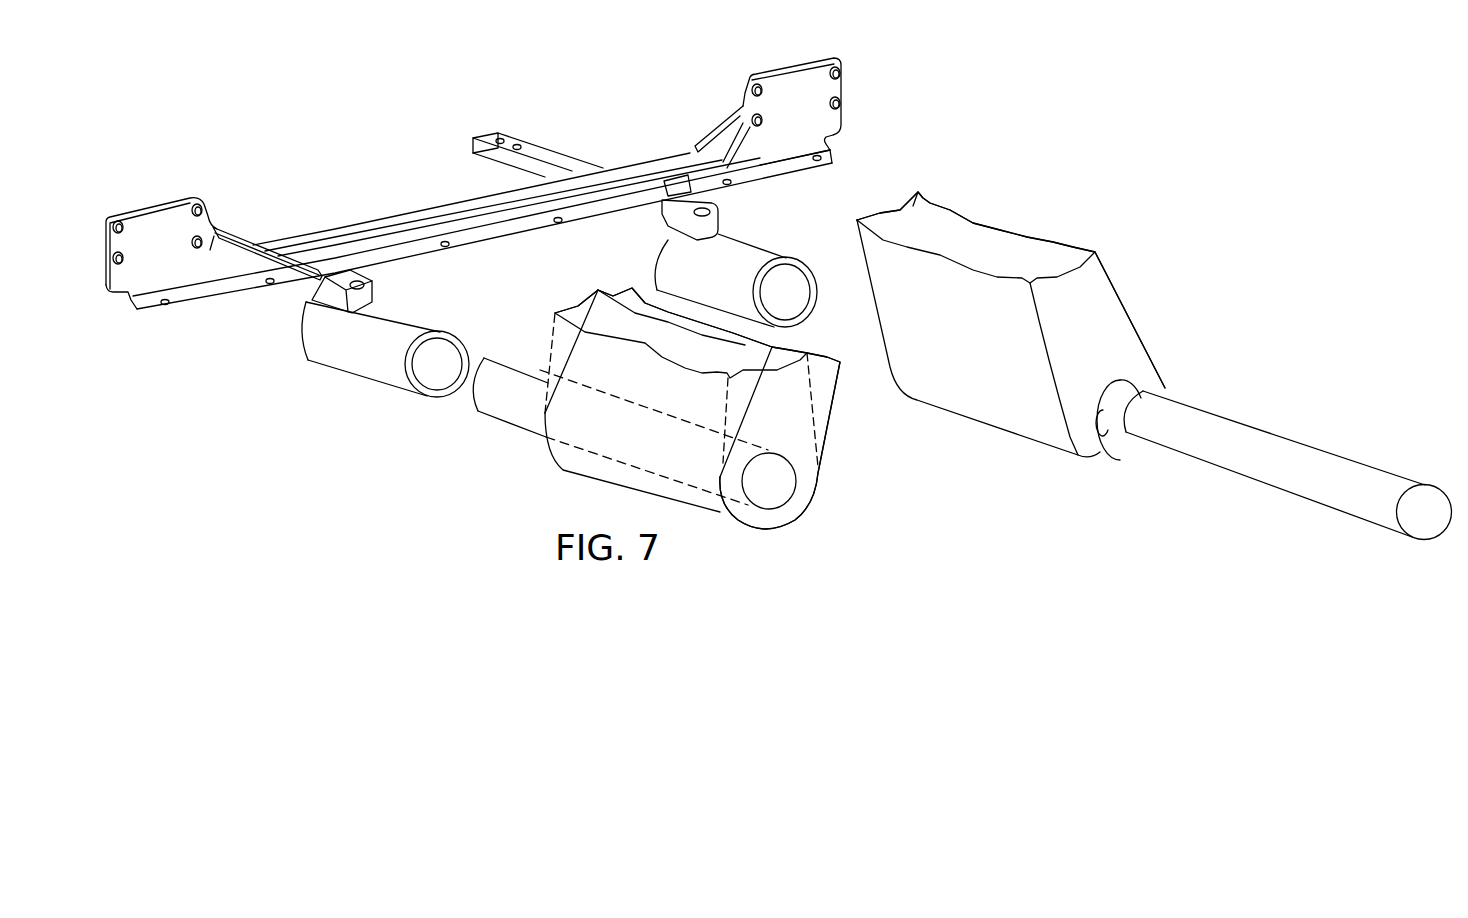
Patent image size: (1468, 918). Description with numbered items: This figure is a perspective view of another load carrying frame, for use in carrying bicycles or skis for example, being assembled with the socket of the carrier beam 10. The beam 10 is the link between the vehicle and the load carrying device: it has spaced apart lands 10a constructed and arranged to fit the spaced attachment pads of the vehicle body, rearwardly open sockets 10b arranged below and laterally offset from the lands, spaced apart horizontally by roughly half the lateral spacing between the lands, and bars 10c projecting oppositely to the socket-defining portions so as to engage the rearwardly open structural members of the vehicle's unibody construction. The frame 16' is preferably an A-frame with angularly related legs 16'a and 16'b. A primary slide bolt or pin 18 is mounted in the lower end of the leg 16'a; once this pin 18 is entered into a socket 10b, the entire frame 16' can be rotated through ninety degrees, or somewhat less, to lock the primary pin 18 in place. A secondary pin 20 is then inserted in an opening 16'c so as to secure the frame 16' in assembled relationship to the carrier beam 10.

The beam 10 is at (672, 120).
The lands 10a is at (173, 267).
The open sockets 10b is at (360, 348).
The bars 10c is at (553, 158).
The primary slide bolt or pin 18 is at (512, 402).
The frame 16' is at (860, 391).
The leg 16'a is at (715, 408).
The leg 16'b is at (1011, 331).
The opening 16'c is at (1098, 442).
The secondary pin 20 is at (1185, 438).